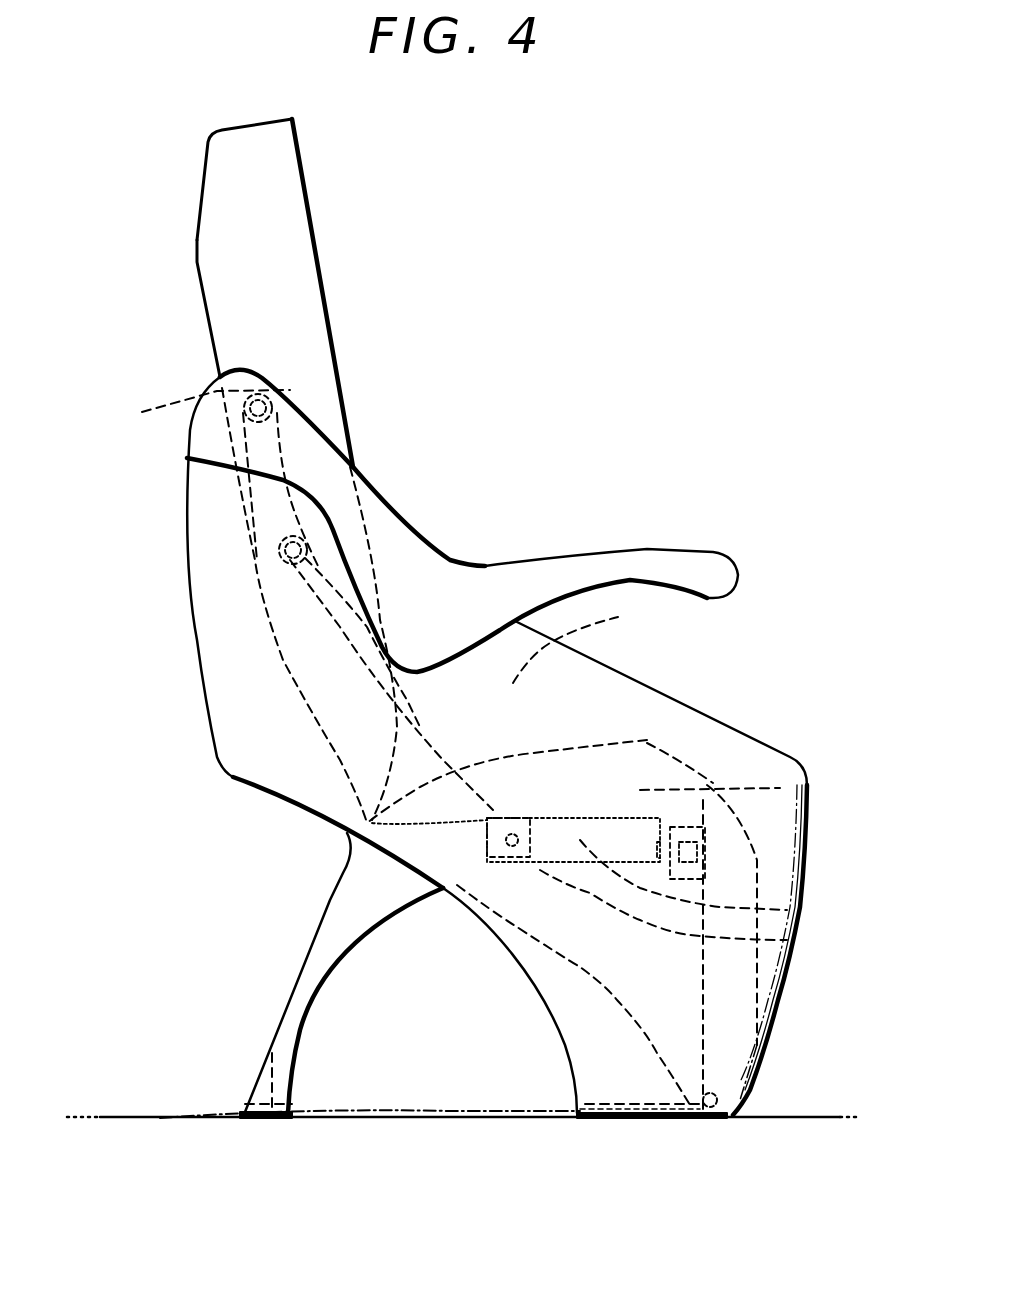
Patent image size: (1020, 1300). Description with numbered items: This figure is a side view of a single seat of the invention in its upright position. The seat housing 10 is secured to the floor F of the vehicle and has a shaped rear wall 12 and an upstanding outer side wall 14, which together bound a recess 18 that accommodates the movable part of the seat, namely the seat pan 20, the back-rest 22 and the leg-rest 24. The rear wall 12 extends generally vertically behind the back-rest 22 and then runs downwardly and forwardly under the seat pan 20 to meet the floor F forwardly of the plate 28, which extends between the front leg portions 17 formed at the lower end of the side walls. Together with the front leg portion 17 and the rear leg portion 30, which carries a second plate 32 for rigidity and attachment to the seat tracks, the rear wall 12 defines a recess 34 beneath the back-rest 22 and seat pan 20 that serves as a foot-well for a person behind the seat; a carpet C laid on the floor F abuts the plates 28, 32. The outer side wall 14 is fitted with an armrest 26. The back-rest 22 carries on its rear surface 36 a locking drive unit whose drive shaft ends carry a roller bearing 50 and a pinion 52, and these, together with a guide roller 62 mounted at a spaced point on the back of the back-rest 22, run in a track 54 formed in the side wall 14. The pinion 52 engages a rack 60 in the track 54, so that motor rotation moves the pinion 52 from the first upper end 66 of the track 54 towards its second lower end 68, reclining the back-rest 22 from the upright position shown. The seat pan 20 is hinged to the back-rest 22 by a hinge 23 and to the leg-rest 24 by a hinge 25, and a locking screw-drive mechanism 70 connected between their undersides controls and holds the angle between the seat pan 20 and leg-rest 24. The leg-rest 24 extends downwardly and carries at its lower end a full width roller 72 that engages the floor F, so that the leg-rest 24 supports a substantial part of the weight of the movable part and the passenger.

The seat housing 10 is at (663, 700).
The rear wall 12 is at (197, 673).
The outer side wall 14 is at (765, 773).
The front leg portion 17 is at (690, 1117).
The recess 18 is at (584, 644).
The seat pan 20 is at (647, 742).
The back-rest 22 is at (318, 248).
The hinge 23 is at (367, 823).
The leg-rest 24 is at (755, 983).
The hinge 25 is at (780, 788).
The armrest 26 is at (713, 552).
The plate 28 is at (627, 1097).
The rear leg portion 30 is at (302, 977).
The second plate 32 is at (272, 1053).
The recess 34 is at (430, 1058).
The rear surface 36 is at (197, 262).
The roller bearing 50 is at (351, 385).
The pinion 52 is at (280, 407).
The track 54 is at (360, 577).
The rack 60 is at (657, 862).
The guide roller 62 is at (280, 565).
The first upper end 66 is at (232, 605).
The second lower end 68 is at (790, 922).
The locking screw-drive mechanism 70 is at (487, 862).
The full width roller 72 is at (733, 1115).
The floor F is at (100, 1117).
The carpet C is at (132, 1117).